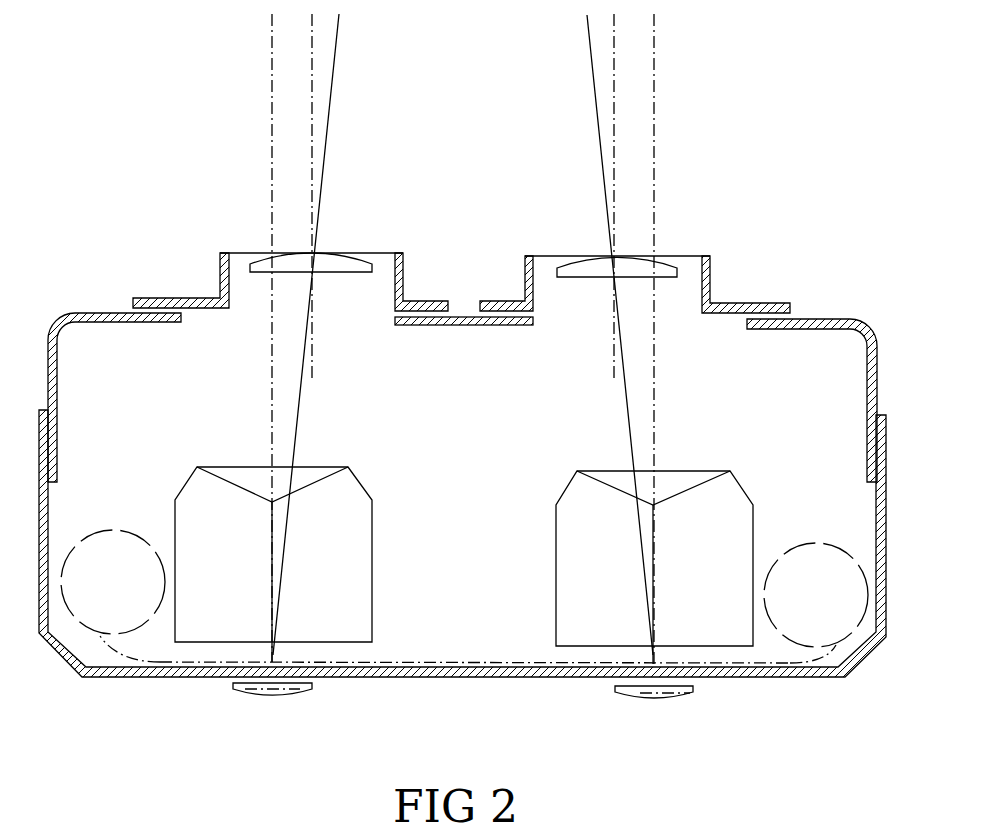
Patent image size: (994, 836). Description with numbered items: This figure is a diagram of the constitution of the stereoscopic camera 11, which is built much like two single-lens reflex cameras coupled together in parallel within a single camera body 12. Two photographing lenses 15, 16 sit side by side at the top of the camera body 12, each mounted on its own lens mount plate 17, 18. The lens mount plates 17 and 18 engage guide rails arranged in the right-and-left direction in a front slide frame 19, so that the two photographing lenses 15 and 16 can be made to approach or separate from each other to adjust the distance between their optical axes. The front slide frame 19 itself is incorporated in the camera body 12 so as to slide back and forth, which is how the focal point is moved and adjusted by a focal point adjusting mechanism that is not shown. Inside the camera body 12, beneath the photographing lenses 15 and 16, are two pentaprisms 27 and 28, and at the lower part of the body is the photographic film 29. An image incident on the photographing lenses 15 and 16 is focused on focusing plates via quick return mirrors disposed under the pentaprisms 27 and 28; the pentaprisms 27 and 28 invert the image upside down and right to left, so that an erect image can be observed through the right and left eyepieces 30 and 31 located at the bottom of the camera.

The stereoscopic camera 11 is at (112, 207).
The camera body 12 is at (140, 678).
The photographing lens 15 is at (588, 262).
The photographing lens 16 is at (340, 262).
The lens mount plate 17 is at (497, 300).
The lens mount plate 18 is at (163, 298).
The front slide frame 19 is at (78, 312).
The pentaprism 27 is at (585, 635).
The pentaprism 28 is at (210, 633).
The photographic film 29 is at (102, 636).
The eyepiece 30 is at (675, 700).
The eyepiece 31 is at (293, 695).